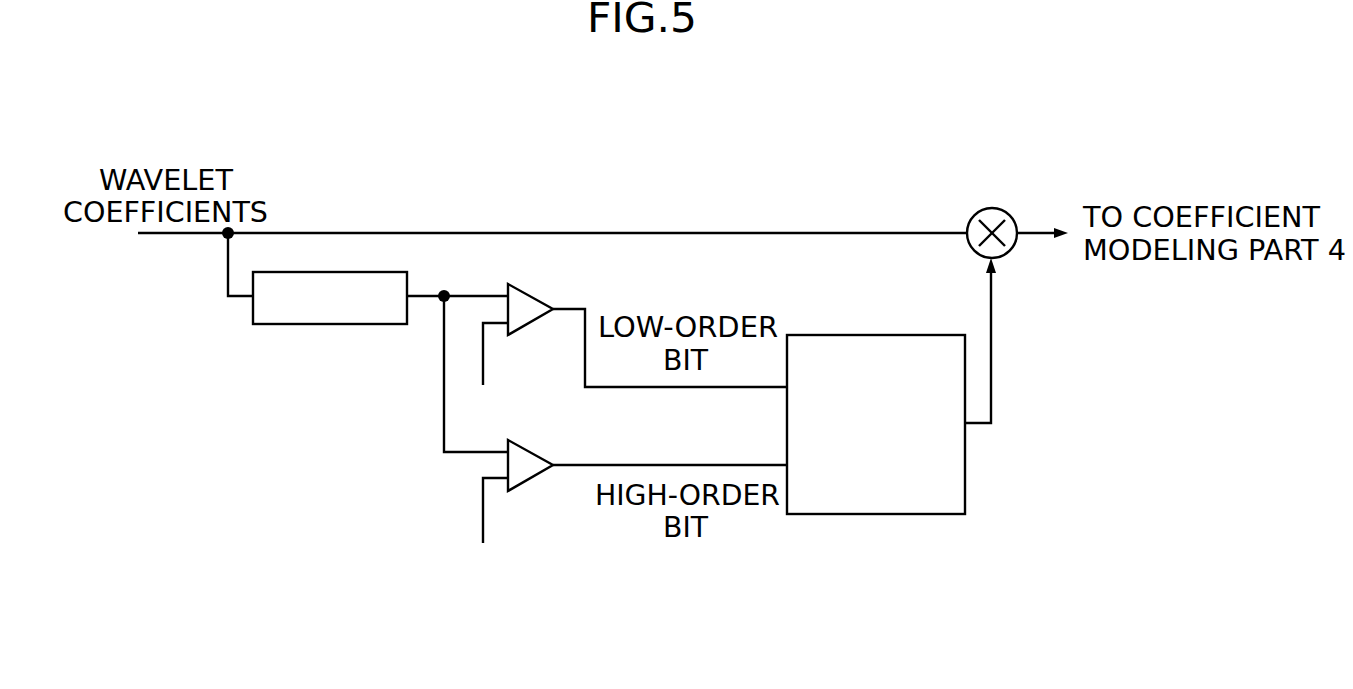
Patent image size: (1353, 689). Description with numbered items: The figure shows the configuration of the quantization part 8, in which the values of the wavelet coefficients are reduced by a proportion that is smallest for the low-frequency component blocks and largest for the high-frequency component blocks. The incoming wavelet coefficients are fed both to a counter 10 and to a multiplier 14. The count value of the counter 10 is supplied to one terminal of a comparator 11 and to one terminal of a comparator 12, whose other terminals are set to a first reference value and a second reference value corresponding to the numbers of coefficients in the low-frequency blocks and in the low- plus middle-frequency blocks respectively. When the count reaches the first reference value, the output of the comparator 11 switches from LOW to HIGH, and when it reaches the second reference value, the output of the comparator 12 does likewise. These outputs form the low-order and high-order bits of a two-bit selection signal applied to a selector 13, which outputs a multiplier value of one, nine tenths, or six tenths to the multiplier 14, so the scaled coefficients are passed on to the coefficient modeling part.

The quantization part 8 is at (782, 163).
The counter 10 is at (332, 324).
The comparator 11 is at (532, 296).
The comparator 12 is at (532, 452).
The selector 13 is at (875, 335).
The multiplier 14 is at (990, 207).